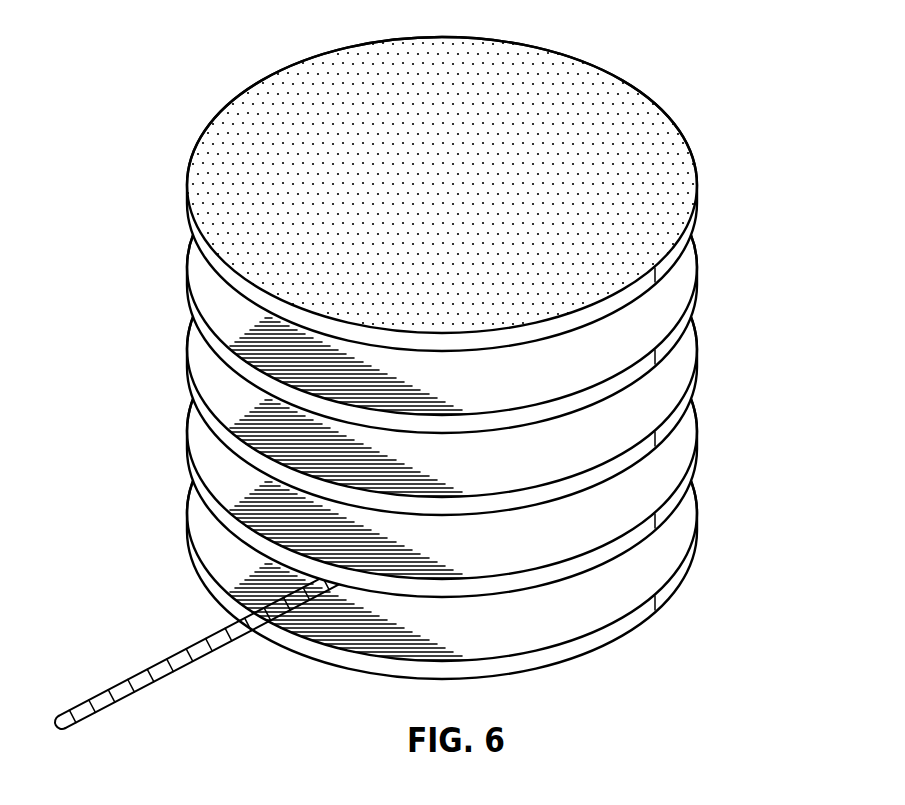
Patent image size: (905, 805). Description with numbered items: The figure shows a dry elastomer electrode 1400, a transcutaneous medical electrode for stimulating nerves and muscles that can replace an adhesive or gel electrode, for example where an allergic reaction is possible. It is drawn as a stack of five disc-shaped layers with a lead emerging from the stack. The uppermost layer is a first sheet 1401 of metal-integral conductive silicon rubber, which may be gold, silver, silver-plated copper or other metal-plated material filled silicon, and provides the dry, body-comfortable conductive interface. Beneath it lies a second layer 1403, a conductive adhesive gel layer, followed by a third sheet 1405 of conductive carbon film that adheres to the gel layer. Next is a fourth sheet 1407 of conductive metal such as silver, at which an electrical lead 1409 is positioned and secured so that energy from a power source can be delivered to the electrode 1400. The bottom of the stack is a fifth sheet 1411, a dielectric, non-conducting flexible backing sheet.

The electrode 1400 is at (405, 364).
The first sheet 1401 is at (698, 173).
The second layer 1403 is at (698, 255).
The third sheet 1405 is at (698, 337).
The fourth sheet 1407 is at (698, 418).
The electrical lead 1409 is at (187, 678).
The fifth sheet 1411 is at (698, 501).